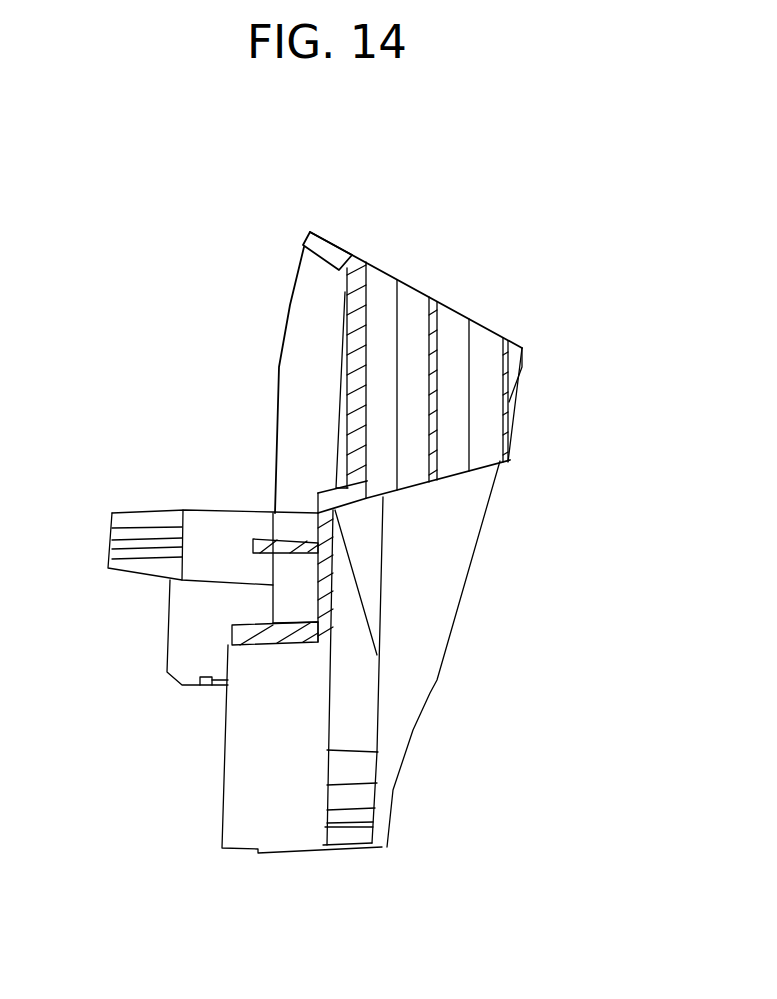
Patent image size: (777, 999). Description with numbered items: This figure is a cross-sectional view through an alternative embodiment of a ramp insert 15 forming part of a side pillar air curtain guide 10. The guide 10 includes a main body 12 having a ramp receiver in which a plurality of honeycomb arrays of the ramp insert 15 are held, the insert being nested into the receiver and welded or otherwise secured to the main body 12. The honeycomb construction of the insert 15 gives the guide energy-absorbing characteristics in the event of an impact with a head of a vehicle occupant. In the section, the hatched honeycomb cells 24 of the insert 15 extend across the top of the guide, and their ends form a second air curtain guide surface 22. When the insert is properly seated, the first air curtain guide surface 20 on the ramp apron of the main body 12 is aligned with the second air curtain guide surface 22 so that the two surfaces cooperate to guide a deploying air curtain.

The side pillar air curtain guide 10 is at (153, 323).
The main body 12 is at (260, 723).
The ramp insert 15 is at (532, 317).
The first air curtain guide surface 20 is at (325, 242).
The second air curtain guide surface 22 is at (352, 258).
The honeycomb cells 24 is at (415, 305).